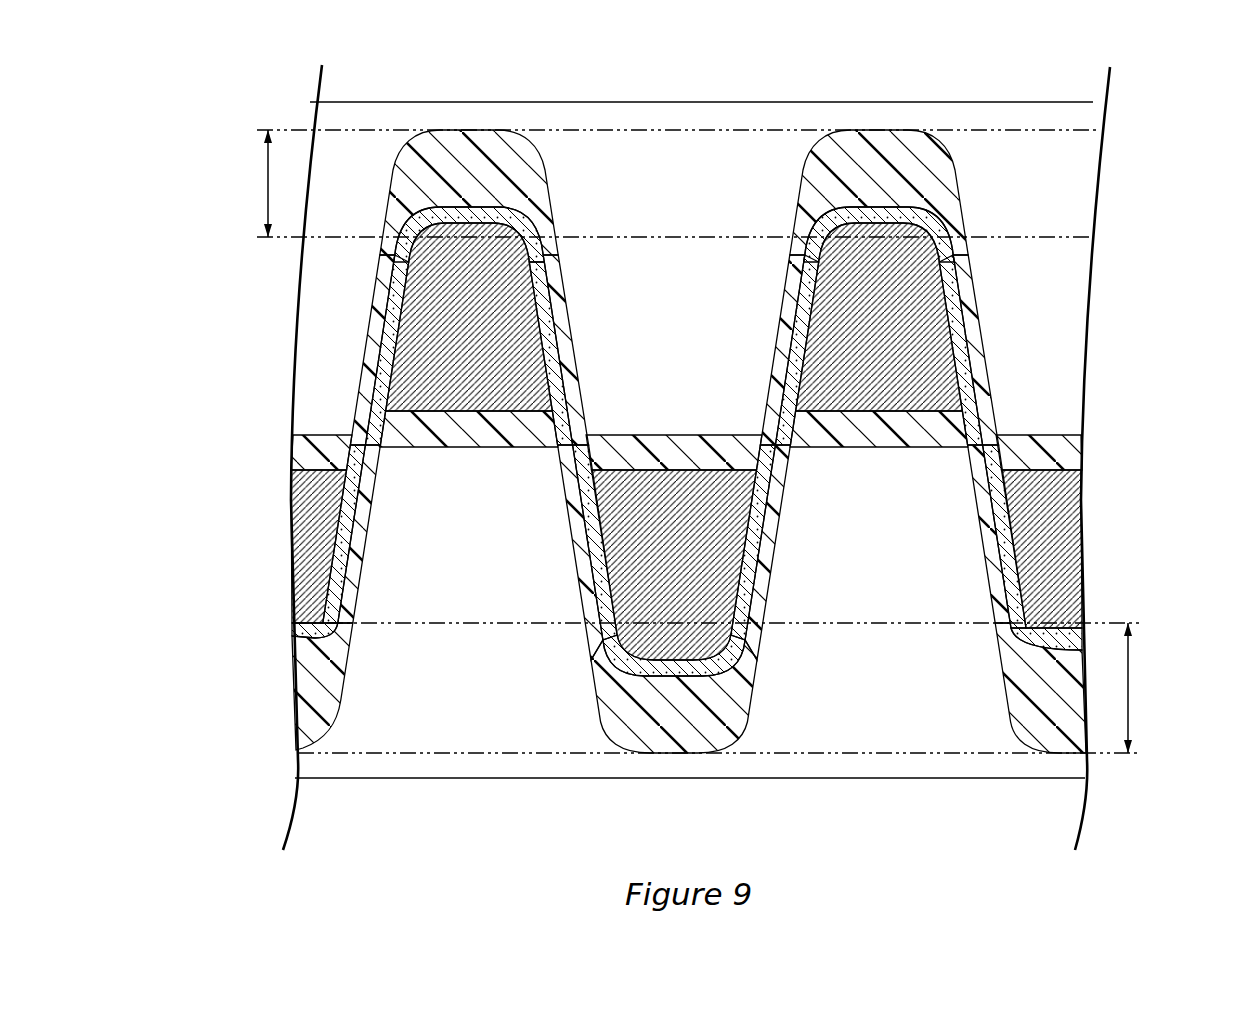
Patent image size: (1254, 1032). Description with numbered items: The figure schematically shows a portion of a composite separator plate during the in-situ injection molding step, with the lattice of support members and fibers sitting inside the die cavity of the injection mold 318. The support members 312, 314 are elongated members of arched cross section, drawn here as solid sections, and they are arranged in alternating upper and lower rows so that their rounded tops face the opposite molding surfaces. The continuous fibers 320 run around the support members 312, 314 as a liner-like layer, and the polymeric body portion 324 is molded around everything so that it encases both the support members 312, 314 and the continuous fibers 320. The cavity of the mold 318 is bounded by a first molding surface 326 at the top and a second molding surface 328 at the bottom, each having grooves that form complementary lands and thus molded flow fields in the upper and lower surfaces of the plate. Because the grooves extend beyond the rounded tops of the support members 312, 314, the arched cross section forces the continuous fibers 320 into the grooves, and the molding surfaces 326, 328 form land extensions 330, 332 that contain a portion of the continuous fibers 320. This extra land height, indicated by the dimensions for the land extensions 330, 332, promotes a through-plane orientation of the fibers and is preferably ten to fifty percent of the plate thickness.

The support member 312 is at (315, 553).
The support member 314 is at (505, 331).
The mold 318 is at (1055, 128).
The continuous fibers 320 is at (967, 323).
The polymeric body portion 324 is at (947, 188).
The first molding surface 326 is at (879, 155).
The second molding surface 328 is at (700, 748).
The land extension 330 is at (266, 188).
The land extension 332 is at (1148, 690).